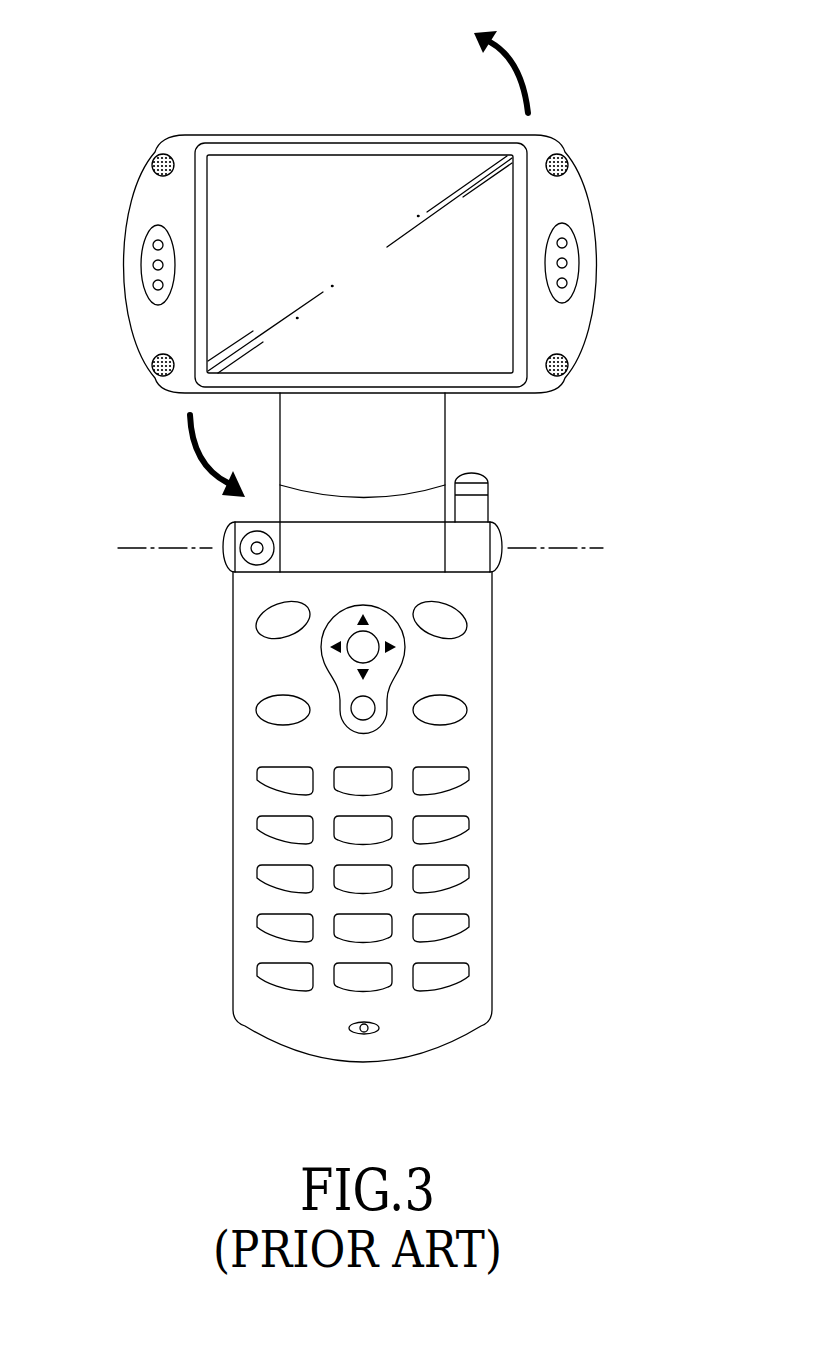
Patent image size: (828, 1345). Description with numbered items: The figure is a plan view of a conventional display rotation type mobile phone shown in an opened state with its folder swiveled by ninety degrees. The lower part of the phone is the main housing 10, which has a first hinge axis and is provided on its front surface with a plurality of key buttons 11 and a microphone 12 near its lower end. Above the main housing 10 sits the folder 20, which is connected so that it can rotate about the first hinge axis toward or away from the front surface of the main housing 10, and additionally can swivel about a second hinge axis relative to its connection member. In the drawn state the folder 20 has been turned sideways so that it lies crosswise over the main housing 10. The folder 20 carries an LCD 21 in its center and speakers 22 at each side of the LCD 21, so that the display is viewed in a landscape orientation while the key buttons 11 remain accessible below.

The main housing 10 is at (510, 800).
The key buttons 11 is at (220, 990).
The microphone 12 is at (364, 1034).
The folder 20 is at (612, 238).
The LCD 21 is at (270, 173).
The speakers 22 is at (572, 272).